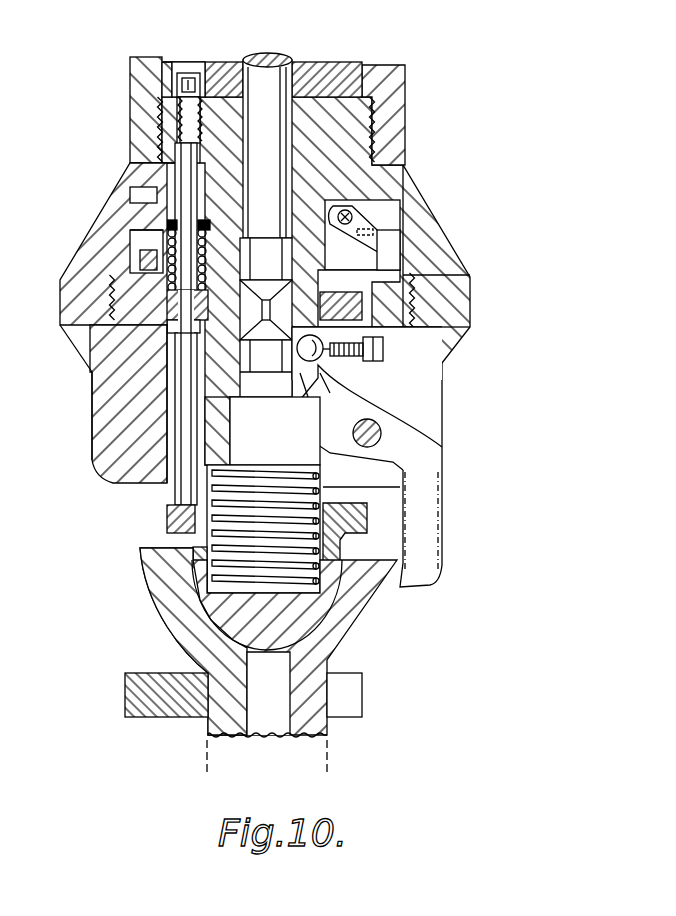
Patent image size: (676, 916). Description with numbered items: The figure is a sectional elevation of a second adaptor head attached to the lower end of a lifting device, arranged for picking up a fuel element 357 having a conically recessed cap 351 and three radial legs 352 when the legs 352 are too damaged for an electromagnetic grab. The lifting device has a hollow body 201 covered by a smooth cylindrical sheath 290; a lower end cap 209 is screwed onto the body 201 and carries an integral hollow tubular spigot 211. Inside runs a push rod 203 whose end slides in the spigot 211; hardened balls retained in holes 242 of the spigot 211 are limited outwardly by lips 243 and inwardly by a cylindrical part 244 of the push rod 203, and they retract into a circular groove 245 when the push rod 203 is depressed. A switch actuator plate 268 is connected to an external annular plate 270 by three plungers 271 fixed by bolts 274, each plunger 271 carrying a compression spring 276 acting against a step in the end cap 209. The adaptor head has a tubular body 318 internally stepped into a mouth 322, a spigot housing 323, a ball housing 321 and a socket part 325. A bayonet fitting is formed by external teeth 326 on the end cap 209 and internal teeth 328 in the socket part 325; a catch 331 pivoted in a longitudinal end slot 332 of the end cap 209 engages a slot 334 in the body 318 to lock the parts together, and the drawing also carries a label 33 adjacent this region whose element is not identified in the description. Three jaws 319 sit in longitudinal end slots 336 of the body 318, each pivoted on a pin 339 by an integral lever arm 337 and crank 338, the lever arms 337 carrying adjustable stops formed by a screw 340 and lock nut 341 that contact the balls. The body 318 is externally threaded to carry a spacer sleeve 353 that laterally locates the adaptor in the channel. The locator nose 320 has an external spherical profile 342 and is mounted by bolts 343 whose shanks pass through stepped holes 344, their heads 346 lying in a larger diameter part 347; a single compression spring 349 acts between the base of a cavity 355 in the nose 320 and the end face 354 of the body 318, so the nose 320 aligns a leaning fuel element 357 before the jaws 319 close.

The body 201 is at (397, 100).
The push rod 203 is at (272, 58).
The second end cap 209 is at (395, 167).
The hollow tubular spigot 211 is at (307, 252).
The holes 242 is at (443, 302).
The lips 243 is at (340, 382).
The cylindrical part 244 is at (266, 368).
The circular groove 245 is at (167, 303).
The switch actuator plate 268 is at (330, 83).
The external annular plate 270 is at (330, 292).
The plungers 271 is at (185, 190).
The bolts 274 is at (188, 72).
The compression spring 276 is at (140, 238).
The cylindrical sheath 290 is at (403, 149).
The tubular body 318 is at (100, 430).
The pivoted jaws 319 is at (428, 490).
The locator nose 320 is at (268, 632).
The ball housing 321 is at (342, 367).
The mouth 322 is at (310, 463).
The spigot housing 323 is at (230, 406).
The socket part 325 is at (430, 283).
The external teeth 326 is at (145, 262).
The internal teeth 328 is at (135, 244).
The inner wall 33 is at (400, 203).
The catch 331 is at (415, 236).
The longitudinal end slot 332 is at (395, 213).
The slot 334 is at (410, 258).
The longitudinal end slots 336 is at (436, 399).
The lever arm 337 is at (352, 395).
The crank 338 is at (337, 432).
The pin 339 is at (377, 438).
The screw 340 is at (378, 352).
The lock nut 341 is at (383, 339).
The external spherical profile 342 is at (317, 620).
The bolts 343 is at (175, 395).
The holes 344 is at (168, 442).
The heads 346 is at (78, 343).
The larger diameter part 347 is at (92, 372).
The compression spring 349 is at (363, 540).
The conically recessed cap 351 is at (355, 612).
The radial legs 352 is at (350, 690).
The spacer sleeve 353 is at (456, 320).
The end face 354 is at (275, 431).
The cavity 355 is at (212, 542).
The fuel element 357 is at (207, 757).